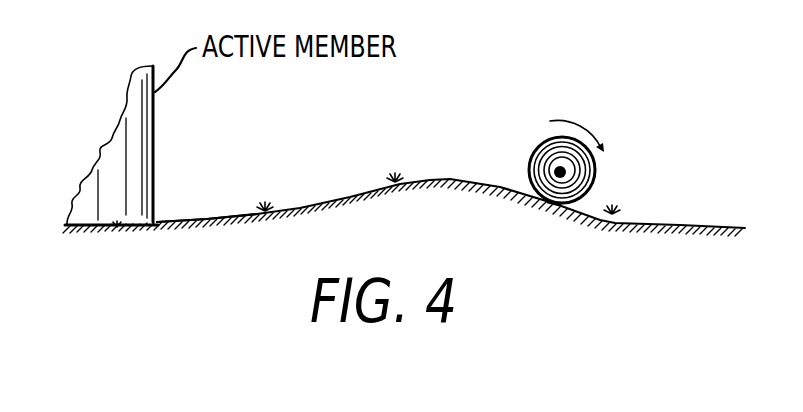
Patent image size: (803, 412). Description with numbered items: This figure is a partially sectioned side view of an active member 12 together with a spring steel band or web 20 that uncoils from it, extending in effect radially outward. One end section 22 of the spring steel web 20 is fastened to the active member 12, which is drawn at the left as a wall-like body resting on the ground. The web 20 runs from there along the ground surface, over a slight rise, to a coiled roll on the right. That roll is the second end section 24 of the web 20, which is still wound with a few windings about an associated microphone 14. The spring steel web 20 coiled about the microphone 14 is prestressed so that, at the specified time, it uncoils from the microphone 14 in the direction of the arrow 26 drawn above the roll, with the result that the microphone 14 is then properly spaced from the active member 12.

The active member 12 is at (114, 175).
The microphone 14 is at (556, 207).
The spring steel band or web 20 is at (336, 195).
The end section 22 is at (190, 211).
The second end section 24 is at (535, 144).
The arrow 26 is at (583, 130).